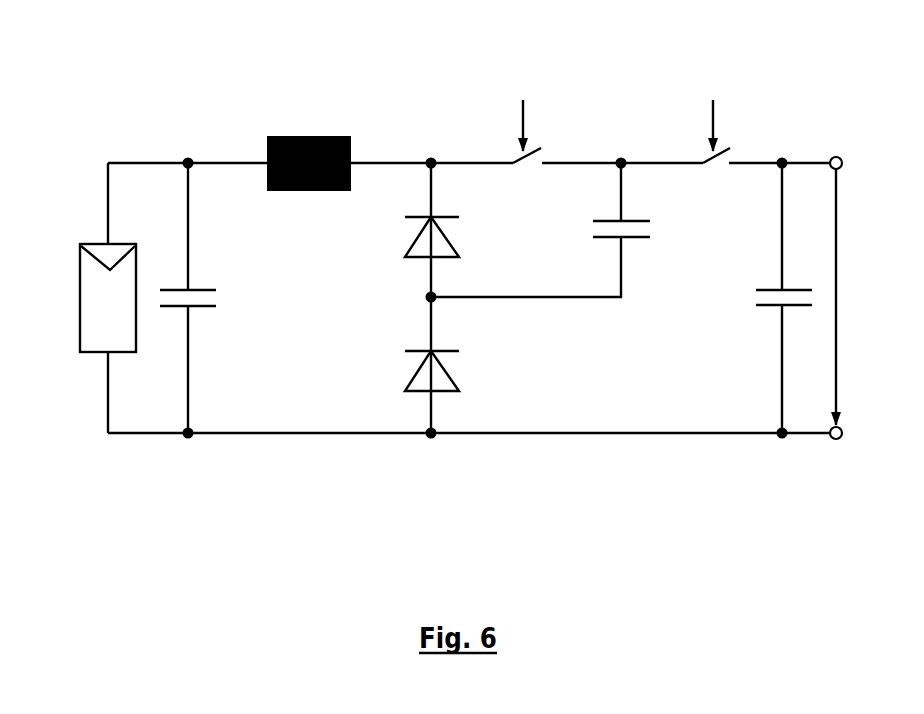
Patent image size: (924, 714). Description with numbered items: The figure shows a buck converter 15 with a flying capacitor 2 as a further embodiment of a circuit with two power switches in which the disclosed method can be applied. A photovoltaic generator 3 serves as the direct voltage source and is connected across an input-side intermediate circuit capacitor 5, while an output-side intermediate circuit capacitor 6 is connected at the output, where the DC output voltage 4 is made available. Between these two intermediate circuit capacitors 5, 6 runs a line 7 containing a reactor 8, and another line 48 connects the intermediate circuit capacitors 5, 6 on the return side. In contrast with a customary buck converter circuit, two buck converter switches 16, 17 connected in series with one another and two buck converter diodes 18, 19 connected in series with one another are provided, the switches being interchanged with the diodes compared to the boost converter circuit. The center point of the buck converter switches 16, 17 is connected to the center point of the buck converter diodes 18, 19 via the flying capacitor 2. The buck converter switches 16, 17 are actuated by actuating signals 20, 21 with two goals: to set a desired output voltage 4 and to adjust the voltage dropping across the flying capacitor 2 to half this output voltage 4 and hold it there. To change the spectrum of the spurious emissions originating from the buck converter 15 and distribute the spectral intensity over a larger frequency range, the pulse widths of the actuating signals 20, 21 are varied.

The flying capacitor 2 is at (631, 214).
The photovoltaic generator 3 is at (92, 239).
The DC output voltage 4 is at (841, 310).
The input-side intermediate circuit capacitor 5 is at (178, 284).
The output-side intermediate circuit capacitor 6 is at (792, 281).
The line 7 is at (231, 162).
The reactor 8 is at (313, 136).
The buck converter 15 is at (754, 124).
The buck converter switch 16 is at (537, 133).
The buck converter switch 17 is at (723, 133).
The buck converter diode 18 is at (408, 268).
The buck converter diode 19 is at (417, 403).
The actuating signal 20 is at (521, 137).
The actuating signal 21 is at (711, 122).
The other line 48 is at (242, 434).